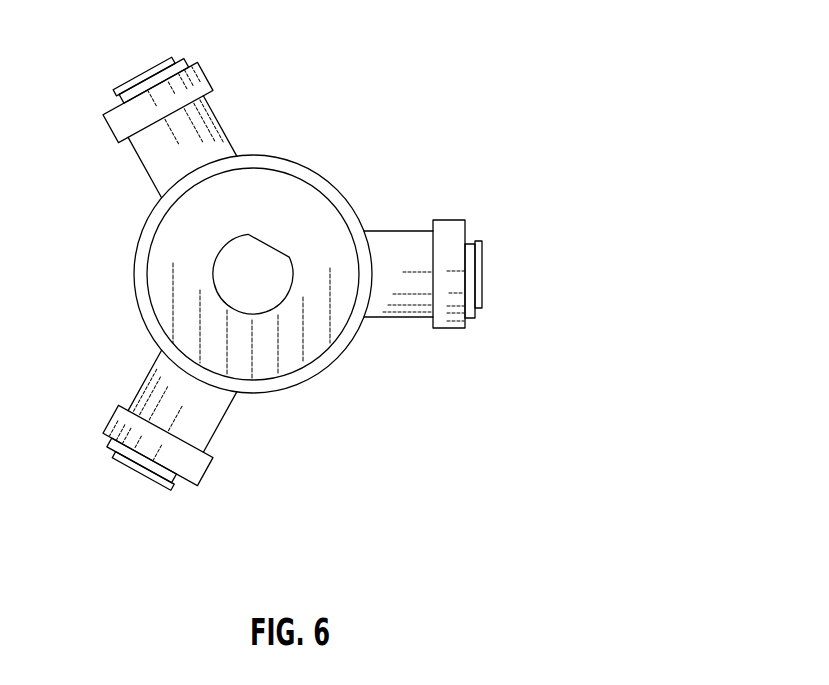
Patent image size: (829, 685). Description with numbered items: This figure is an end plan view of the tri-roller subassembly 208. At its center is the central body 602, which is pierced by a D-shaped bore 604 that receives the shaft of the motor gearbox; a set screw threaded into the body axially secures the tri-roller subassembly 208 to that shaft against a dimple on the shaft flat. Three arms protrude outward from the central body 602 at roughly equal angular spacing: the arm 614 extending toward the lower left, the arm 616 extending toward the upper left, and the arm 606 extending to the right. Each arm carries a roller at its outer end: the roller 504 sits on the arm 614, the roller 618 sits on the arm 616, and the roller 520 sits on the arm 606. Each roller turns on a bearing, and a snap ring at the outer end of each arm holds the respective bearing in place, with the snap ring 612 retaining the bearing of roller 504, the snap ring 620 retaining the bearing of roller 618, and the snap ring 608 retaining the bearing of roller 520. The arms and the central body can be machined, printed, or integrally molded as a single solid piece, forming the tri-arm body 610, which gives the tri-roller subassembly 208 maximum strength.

The tri-roller subassembly 208 is at (427, 43).
The tri-arm body 610 is at (284, 441).
The central body 602 is at (258, 165).
The D-shaped bore 604 is at (277, 248).
The arm 606 is at (393, 308).
The roller 520 is at (455, 320).
The snap ring 608 is at (482, 263).
The arm 616 is at (146, 169).
The roller 618 is at (106, 129).
The snap ring 620 is at (120, 93).
The arm 614 is at (153, 375).
The roller 504 is at (116, 411).
The snap ring 612 is at (140, 475).